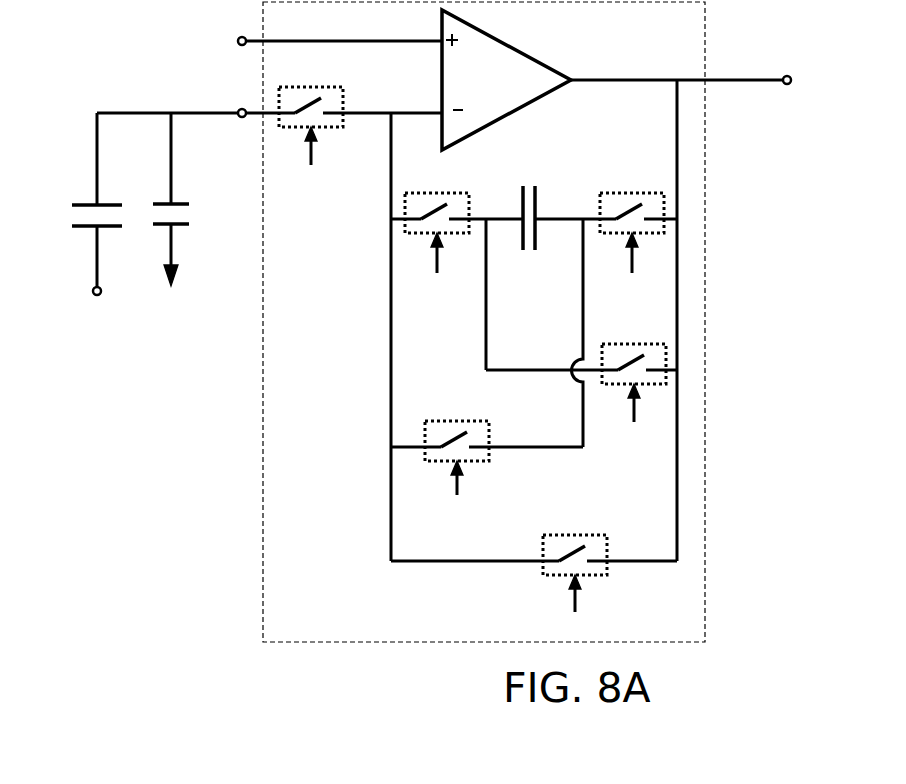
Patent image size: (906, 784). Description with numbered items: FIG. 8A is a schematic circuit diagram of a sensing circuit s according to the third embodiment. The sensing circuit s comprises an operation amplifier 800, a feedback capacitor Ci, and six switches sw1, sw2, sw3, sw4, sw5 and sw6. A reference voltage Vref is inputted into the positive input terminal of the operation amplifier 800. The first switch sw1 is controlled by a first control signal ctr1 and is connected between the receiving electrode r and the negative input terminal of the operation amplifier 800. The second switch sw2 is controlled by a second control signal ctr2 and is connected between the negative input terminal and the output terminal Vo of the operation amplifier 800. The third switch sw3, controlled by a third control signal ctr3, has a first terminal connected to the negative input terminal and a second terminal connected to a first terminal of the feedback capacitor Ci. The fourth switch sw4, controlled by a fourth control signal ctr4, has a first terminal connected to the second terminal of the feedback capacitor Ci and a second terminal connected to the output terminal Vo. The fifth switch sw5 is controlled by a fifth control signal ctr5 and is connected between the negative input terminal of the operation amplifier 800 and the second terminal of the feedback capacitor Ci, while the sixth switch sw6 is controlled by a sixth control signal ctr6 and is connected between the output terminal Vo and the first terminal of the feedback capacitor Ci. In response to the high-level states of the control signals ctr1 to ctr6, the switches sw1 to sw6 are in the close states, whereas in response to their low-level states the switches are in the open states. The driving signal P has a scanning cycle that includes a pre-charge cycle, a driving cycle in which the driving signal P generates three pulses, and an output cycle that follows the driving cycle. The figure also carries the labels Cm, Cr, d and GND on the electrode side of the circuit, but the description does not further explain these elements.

The operation amplifier 800 is at (522, 65).
The sensing circuit s is at (270, 572).
The first switch sw1 is at (318, 90).
The second switch sw2 is at (575, 540).
The third switch sw3 is at (413, 193).
The fourth switch sw4 is at (608, 193).
The fifth switch sw5 is at (459, 421).
The sixth switch sw6 is at (618, 344).
The first control signal ctr1 is at (318, 161).
The second control signal ctr2 is at (580, 610).
The third control signal ctr3 is at (443, 269).
The fourth control signal ctr4 is at (639, 269).
The fifth control signal ctr5 is at (465, 497).
The sixth control signal ctr6 is at (642, 420).
The feedback capacitor Ci is at (551, 237).
The mutual capacitance Cm is at (112, 200).
The reference capacitance Cr is at (186, 199).
The reference voltage Vref is at (321, 24).
The output terminal Vo is at (688, 61).
The receiving electrode r is at (118, 112).
The driving electrode line d is at (97, 246).
The driving signal P is at (97, 313).
The ground GND is at (178, 305).